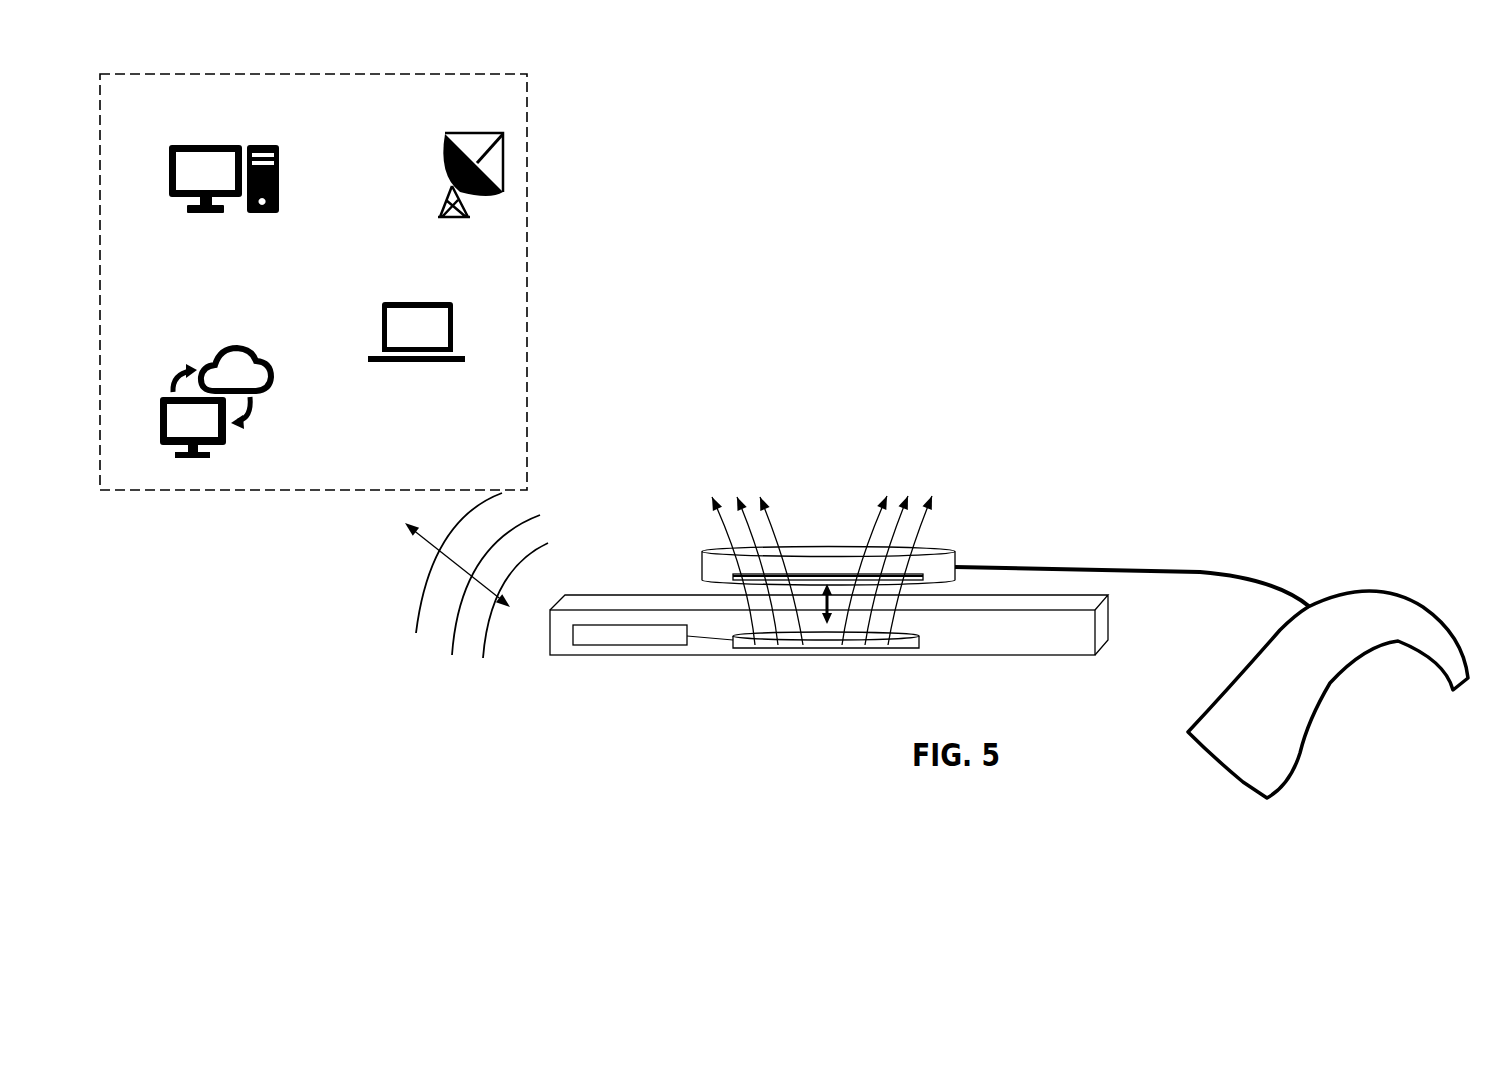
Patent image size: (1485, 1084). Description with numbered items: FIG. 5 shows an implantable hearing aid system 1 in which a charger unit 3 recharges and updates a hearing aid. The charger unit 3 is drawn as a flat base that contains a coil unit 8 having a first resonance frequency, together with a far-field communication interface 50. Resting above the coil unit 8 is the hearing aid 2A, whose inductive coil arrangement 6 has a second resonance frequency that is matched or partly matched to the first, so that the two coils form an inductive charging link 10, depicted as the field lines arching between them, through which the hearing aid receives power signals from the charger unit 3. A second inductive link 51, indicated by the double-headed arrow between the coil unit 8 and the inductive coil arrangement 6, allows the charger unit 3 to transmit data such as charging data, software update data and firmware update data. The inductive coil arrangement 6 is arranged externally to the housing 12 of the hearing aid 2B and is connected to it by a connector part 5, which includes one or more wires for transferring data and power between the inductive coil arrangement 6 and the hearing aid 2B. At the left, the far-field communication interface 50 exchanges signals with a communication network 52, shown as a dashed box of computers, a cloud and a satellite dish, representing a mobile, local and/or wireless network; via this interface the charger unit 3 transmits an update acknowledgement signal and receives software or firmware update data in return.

The implantable hearing aid system 1 is at (1328, 617).
The hearing aid 2A is at (826, 538).
The hearing aid 2B is at (1328, 661).
The housing 12 is at (1328, 592).
The charger unit 3 is at (637, 588).
The connector part 5 is at (1125, 558).
The inductive coil arrangement 6 is at (925, 573).
The coil unit 8 is at (907, 648).
The inductive charging link 10 is at (875, 511).
The far-field communication interface 50 is at (603, 642).
The second inductive link 51 is at (823, 648).
The communication network 52 is at (270, 490).